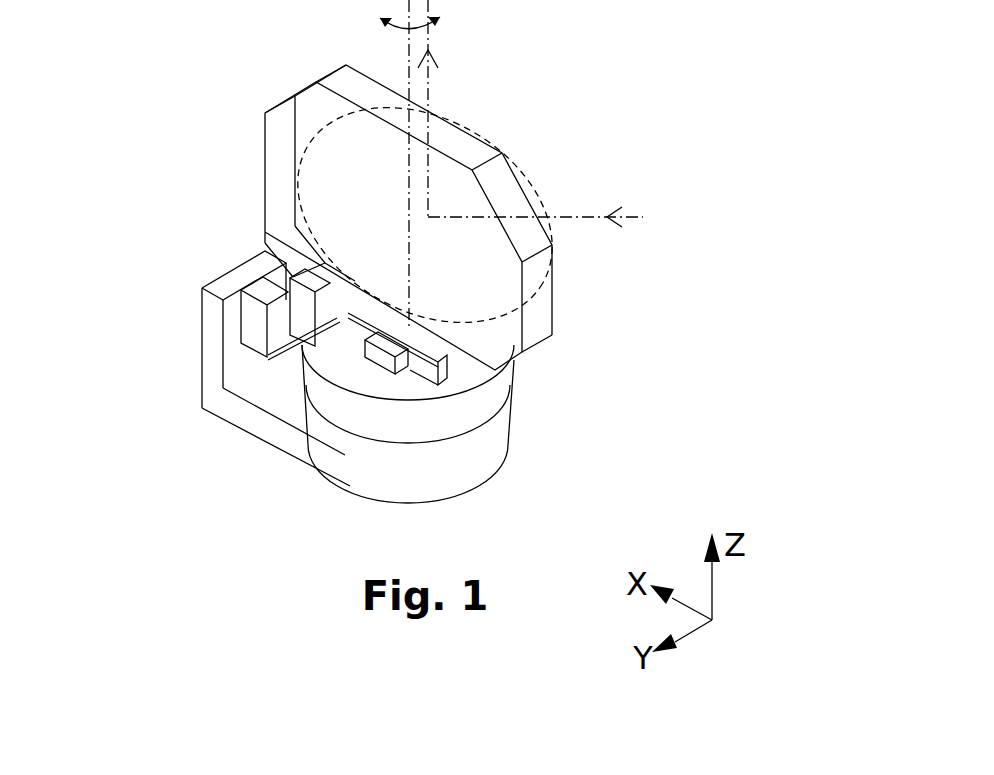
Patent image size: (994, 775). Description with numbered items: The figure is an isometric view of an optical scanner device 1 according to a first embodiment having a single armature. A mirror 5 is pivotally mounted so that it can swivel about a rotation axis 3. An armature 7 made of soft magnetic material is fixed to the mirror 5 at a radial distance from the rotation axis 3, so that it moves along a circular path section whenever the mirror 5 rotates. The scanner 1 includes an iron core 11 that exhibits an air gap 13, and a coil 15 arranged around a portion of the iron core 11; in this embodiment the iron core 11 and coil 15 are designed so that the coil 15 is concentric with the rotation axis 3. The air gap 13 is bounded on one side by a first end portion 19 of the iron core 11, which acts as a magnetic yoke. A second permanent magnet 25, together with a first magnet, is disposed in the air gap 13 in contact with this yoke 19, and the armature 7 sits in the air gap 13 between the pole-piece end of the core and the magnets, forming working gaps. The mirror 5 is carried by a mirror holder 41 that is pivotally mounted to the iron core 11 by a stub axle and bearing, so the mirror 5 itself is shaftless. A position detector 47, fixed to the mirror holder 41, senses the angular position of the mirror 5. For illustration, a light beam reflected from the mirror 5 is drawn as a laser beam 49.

The optical scanner device 1 is at (586, 55).
The rotation axis 3 is at (409, 60).
The mirror 5 is at (507, 242).
The armature 7 is at (300, 317).
The iron core 11 is at (300, 437).
The air gap 13 is at (212, 370).
The coil 15 is at (495, 440).
The first end portion 19 is at (166, 329).
The second permanent magnet 25 is at (252, 328).
The mirror holder 41 is at (247, 378).
The position detector 47 is at (229, 410).
The laser beam 49 is at (603, 285).